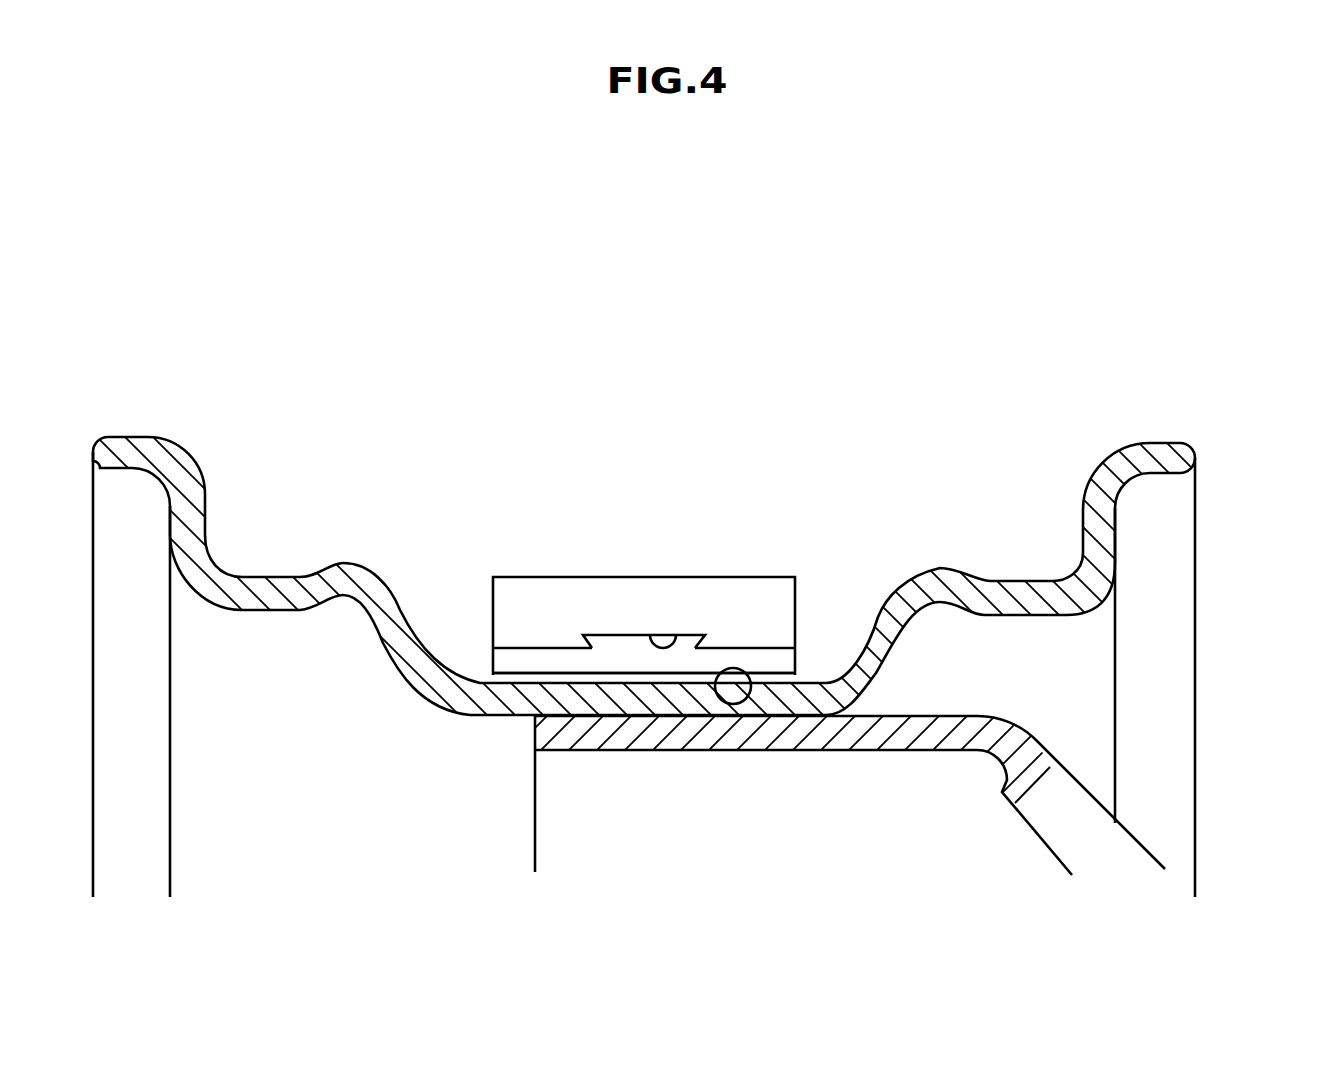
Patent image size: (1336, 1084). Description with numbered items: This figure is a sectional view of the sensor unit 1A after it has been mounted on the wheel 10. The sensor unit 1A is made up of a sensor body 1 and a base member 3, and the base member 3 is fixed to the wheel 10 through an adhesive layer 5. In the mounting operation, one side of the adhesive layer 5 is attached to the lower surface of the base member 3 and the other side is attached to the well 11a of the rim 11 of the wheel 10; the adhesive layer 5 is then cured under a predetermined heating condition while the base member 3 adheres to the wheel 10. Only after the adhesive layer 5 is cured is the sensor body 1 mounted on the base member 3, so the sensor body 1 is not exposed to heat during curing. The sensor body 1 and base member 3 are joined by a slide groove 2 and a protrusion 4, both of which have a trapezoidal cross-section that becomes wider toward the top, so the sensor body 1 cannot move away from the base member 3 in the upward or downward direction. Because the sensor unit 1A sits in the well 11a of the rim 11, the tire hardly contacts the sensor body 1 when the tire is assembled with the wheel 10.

The sensor body 1 is at (541, 592).
The sensor unit 1A is at (814, 531).
The slide groove 2 is at (674, 638).
The base member 3 is at (730, 652).
The protrusion 4 is at (620, 640).
The adhesive layer 5 is at (478, 678).
The wheel 10 is at (1252, 661).
The rim 11 is at (1162, 452).
The well 11a is at (748, 705).